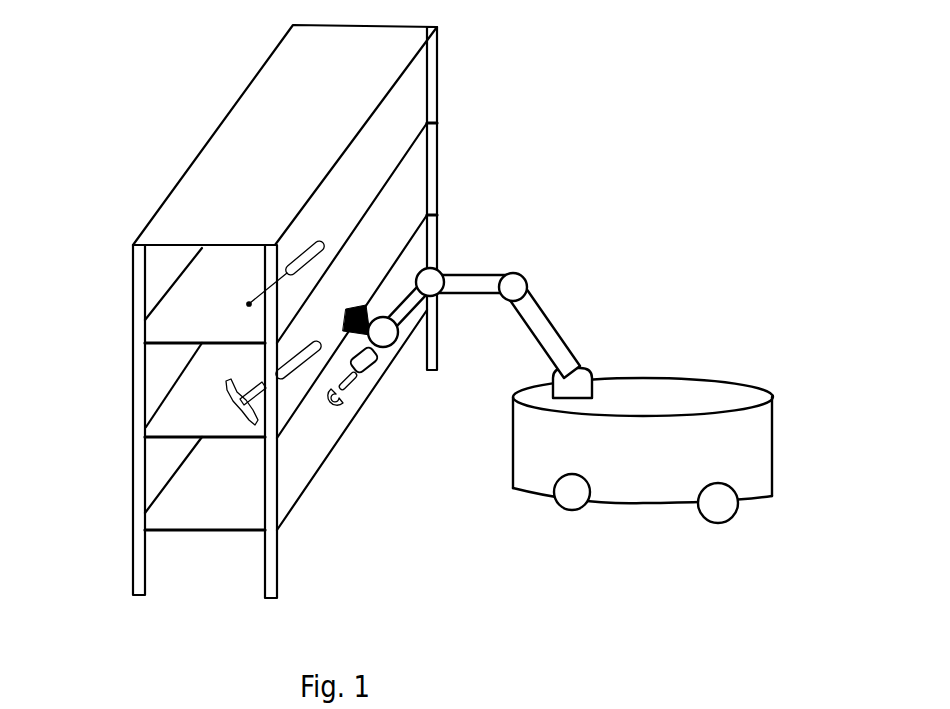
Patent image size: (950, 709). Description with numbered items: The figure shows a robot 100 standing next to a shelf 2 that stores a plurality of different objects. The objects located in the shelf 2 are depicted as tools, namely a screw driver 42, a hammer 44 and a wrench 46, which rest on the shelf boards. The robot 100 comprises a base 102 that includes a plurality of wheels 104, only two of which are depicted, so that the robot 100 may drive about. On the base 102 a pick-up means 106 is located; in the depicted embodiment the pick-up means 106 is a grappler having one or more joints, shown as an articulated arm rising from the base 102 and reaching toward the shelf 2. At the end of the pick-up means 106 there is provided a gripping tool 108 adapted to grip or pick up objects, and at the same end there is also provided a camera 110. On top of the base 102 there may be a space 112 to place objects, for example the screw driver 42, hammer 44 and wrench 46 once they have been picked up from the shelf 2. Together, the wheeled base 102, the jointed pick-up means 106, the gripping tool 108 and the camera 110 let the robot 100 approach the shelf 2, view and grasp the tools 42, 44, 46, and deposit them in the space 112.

The shelf 2 is at (143, 163).
The screw driver 42 is at (327, 227).
The hammer 44 is at (230, 410).
The wrench 46 is at (365, 390).
The robot 100 is at (608, 402).
The base 102 is at (693, 459).
The wheels 104 is at (572, 512).
The pick-up means 106 is at (462, 265).
The gripping tool 108 is at (382, 368).
The camera 110 is at (370, 312).
The space 112 is at (675, 393).